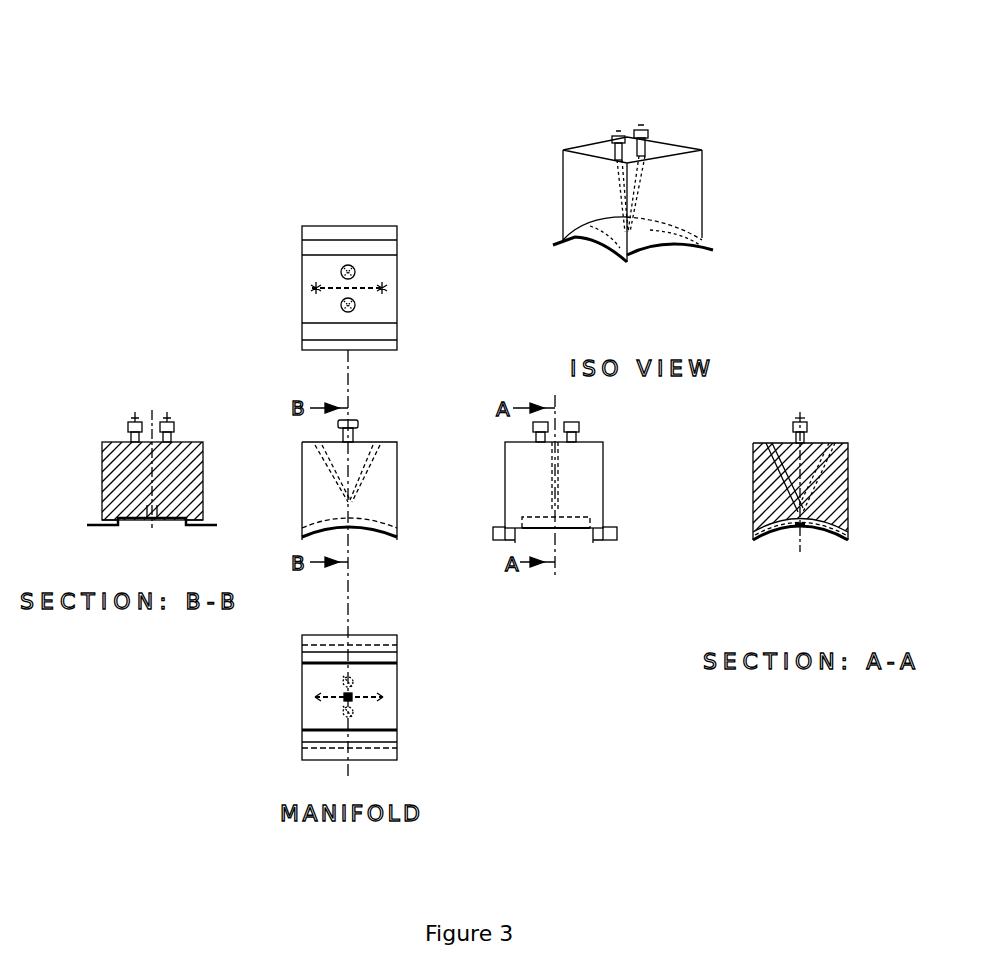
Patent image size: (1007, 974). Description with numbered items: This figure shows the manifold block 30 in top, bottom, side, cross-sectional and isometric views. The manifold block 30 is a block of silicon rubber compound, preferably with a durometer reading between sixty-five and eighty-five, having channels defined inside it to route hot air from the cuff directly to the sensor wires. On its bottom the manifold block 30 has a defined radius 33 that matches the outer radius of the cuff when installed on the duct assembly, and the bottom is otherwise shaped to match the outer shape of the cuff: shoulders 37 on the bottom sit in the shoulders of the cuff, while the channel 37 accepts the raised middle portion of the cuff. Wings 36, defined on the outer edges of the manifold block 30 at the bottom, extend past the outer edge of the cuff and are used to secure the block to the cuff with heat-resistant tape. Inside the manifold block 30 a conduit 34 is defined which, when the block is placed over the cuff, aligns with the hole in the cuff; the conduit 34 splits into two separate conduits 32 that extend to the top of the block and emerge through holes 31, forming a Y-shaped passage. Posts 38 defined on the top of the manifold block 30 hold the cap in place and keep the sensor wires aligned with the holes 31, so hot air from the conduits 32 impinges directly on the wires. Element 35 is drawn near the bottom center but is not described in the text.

The manifold block 30 is at (735, 152).
The holes 31 is at (318, 287).
The conduits 32 is at (768, 445).
The radius 33 is at (372, 532).
The conduit 34 is at (352, 700).
The bottom center portion 35 is at (570, 528).
The wings 36 is at (498, 542).
The shoulders 37 is at (513, 542).
The posts 38 is at (350, 275).